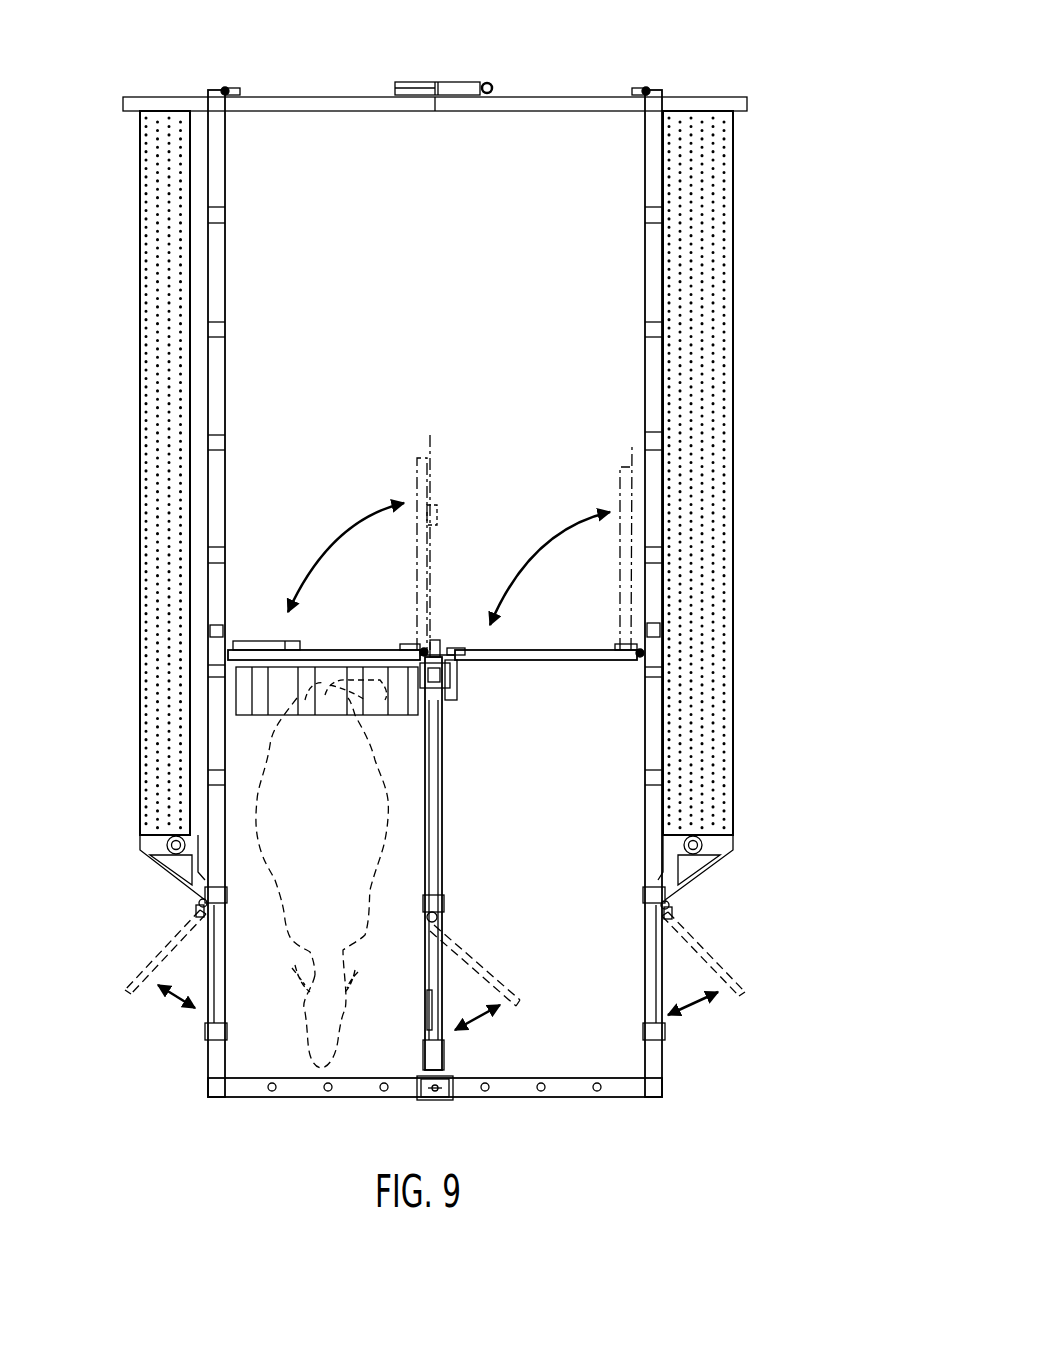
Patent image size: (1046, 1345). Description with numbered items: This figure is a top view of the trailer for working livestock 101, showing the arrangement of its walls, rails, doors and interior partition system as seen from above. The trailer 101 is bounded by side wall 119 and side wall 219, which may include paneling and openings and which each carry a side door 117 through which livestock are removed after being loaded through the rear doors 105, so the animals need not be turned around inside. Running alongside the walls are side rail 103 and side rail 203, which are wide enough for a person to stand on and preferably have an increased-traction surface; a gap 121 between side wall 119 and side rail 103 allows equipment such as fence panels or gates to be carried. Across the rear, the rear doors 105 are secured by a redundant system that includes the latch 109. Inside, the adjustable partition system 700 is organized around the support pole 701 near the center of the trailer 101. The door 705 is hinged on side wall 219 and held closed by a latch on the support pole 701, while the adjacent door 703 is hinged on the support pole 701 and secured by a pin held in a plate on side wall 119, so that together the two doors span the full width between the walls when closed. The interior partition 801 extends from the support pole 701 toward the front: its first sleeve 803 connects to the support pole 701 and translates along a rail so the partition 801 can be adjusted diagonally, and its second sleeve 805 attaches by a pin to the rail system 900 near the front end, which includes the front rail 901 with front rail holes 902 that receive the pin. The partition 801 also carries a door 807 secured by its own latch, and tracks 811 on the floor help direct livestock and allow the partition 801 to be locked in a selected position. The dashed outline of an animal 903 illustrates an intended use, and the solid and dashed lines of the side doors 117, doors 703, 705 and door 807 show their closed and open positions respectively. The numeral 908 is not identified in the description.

The trailer for working livestock 101 is at (712, 55).
The side rail 103 is at (143, 318).
The rear door 105 is at (333, 102).
The latch 109 is at (493, 88).
The side door 117 is at (208, 1010).
The side wall 119 is at (216, 497).
The gap 121 is at (200, 128).
The side rail 203 is at (718, 385).
The side wall 219 is at (652, 512).
The adjustable partition system 700 is at (478, 545).
The support pole 701 is at (457, 672).
The door 703 is at (320, 655).
The door 705 is at (580, 660).
The interior partition 801 is at (443, 845).
The first sleeve 803 is at (435, 715).
The second sleeve 805 is at (430, 1100).
The door 807 is at (428, 988).
The tracks 811 is at (283, 700).
The rail system 900 is at (640, 1122).
The front rail 901 is at (272, 1097).
The front rail holes 902 is at (328, 1097).
The animal 903 is at (308, 870).
The mounting hole 908 is at (541, 1097).